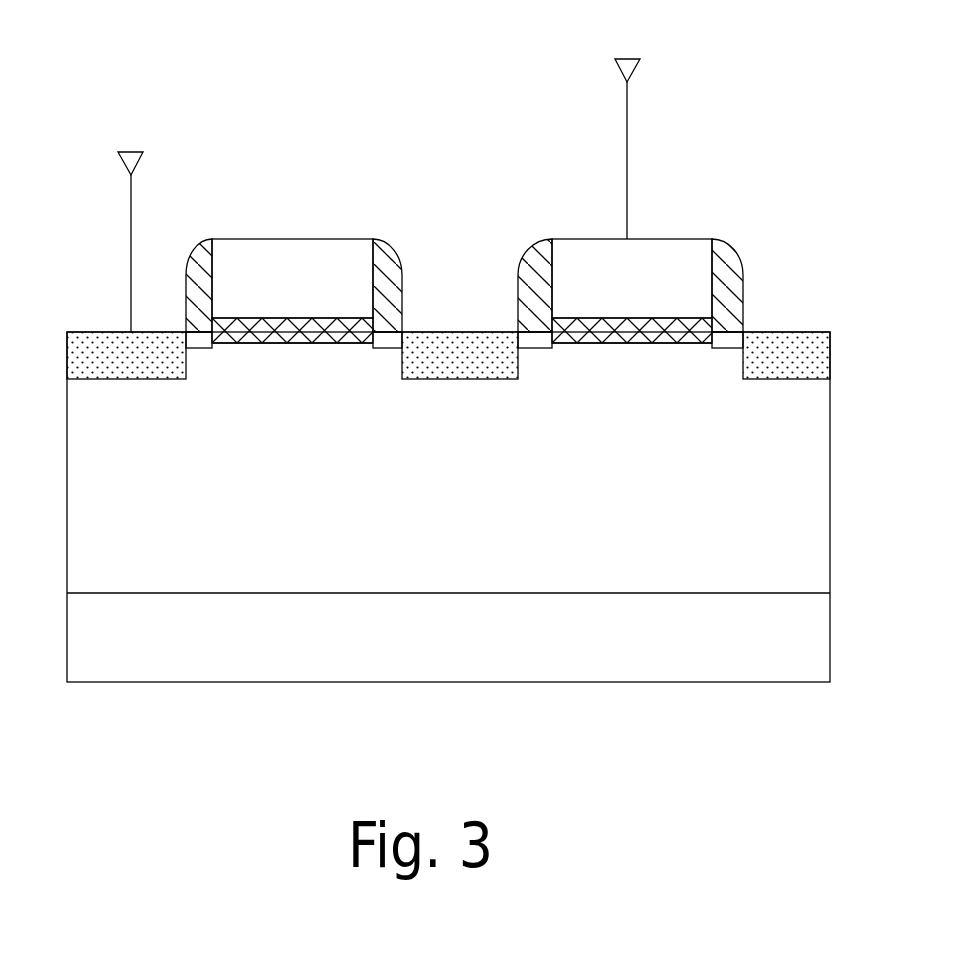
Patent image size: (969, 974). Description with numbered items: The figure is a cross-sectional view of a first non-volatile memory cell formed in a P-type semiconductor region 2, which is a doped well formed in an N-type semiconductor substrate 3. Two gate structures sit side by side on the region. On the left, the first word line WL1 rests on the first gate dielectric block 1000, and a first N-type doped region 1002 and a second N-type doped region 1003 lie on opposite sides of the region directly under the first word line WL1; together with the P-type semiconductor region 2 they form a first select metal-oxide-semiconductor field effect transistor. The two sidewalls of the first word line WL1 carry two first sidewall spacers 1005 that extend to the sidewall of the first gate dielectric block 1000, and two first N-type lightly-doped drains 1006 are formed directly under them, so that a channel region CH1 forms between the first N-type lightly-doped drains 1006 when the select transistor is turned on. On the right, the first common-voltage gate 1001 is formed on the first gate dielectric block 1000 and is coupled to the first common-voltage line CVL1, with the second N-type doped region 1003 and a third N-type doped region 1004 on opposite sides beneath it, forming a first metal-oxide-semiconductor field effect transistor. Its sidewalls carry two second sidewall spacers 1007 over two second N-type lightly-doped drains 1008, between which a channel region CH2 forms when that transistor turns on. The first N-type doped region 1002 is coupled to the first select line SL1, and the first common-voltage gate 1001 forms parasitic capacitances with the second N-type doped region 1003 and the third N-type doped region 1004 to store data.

The first gate dielectric block 1000 is at (269, 318).
The first common-voltage gate 1001 is at (612, 248).
The first N-type doped region 1002 is at (113, 375).
The second N-type doped region 1003 is at (468, 370).
The third N-type doped region 1004 is at (795, 370).
The first sidewall spacers 1005 is at (192, 263).
The first N-type lightly-doped drains 1006 is at (205, 344).
The second sidewall spacers 1007 is at (535, 262).
The second N-type lightly-doped drains 1008 is at (538, 344).
The P-type semiconductor region 2 is at (343, 585).
The N-type semiconductor substrate 3 is at (207, 682).
The first word line WL1 is at (324, 250).
The first select line SL1 is at (120, 225).
The first common-voltage line CVL1 is at (615, 134).
The channel region CH1 is at (290, 343).
The channel region CH2 is at (615, 343).